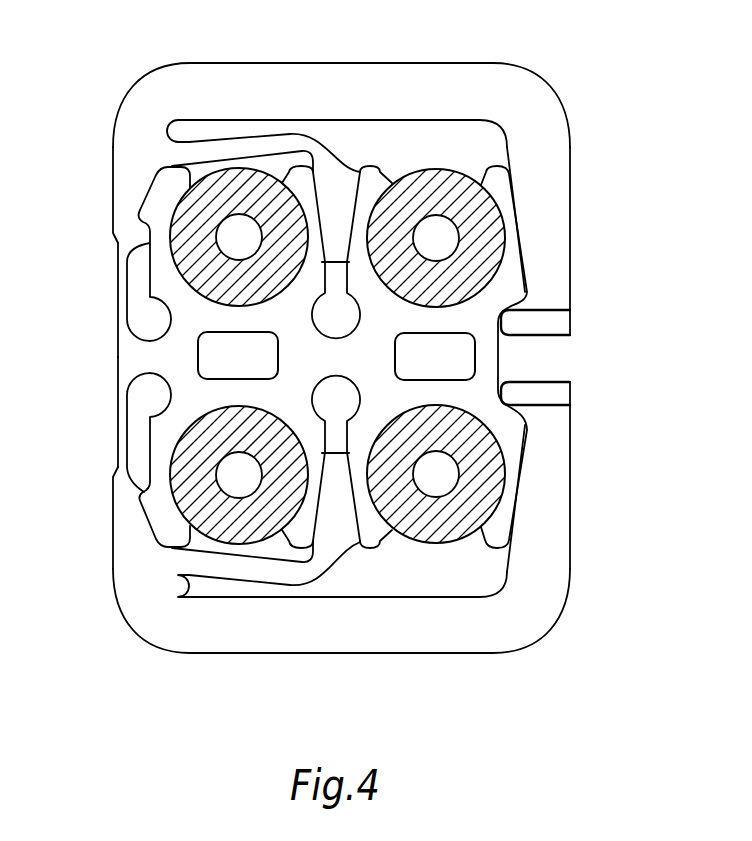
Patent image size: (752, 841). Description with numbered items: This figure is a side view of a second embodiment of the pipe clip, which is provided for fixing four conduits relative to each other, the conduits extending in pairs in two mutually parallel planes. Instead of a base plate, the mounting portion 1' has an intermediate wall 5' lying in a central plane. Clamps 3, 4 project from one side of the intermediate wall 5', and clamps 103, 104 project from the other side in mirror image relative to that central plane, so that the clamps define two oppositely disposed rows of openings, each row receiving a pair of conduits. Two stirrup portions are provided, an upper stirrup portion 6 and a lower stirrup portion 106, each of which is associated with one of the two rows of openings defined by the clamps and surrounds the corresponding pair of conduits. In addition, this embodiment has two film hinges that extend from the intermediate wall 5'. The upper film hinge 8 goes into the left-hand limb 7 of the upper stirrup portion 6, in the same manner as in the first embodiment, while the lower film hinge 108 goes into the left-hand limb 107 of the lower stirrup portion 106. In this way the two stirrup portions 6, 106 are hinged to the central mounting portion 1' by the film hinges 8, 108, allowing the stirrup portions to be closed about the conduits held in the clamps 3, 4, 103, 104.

The upper stirrup portion 6 is at (325, 82).
The left-hand limb 7 is at (123, 157).
The clamp 3 is at (148, 264).
The upper film hinge 8 is at (119, 308).
The clamp 4 is at (525, 273).
The intermediate wall 5' is at (554, 357).
The mounting portion 1' is at (553, 357).
The lower film hinge 108 is at (121, 428).
The clamp 103 is at (148, 447).
The clamp 104 is at (525, 437).
The left-hand limb 107 is at (126, 556).
The lower stirrup portion 106 is at (350, 637).